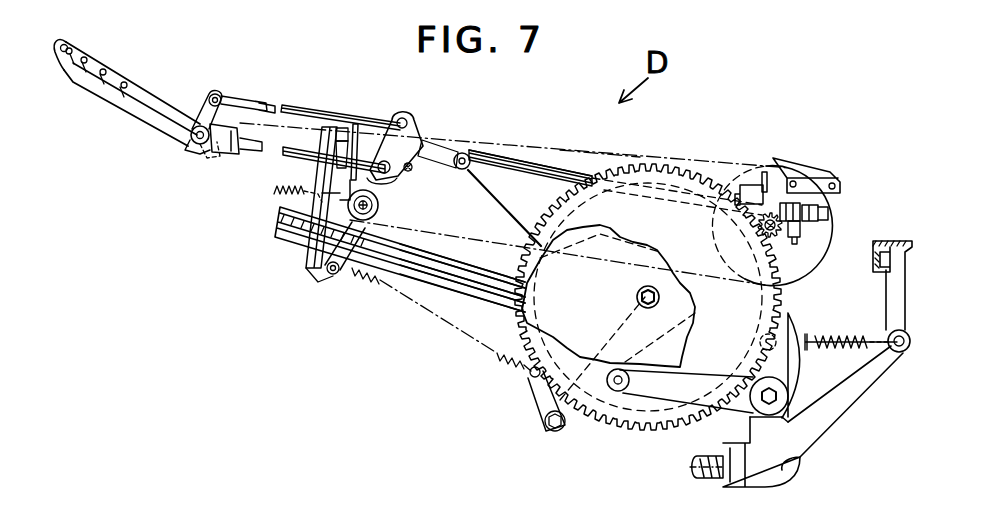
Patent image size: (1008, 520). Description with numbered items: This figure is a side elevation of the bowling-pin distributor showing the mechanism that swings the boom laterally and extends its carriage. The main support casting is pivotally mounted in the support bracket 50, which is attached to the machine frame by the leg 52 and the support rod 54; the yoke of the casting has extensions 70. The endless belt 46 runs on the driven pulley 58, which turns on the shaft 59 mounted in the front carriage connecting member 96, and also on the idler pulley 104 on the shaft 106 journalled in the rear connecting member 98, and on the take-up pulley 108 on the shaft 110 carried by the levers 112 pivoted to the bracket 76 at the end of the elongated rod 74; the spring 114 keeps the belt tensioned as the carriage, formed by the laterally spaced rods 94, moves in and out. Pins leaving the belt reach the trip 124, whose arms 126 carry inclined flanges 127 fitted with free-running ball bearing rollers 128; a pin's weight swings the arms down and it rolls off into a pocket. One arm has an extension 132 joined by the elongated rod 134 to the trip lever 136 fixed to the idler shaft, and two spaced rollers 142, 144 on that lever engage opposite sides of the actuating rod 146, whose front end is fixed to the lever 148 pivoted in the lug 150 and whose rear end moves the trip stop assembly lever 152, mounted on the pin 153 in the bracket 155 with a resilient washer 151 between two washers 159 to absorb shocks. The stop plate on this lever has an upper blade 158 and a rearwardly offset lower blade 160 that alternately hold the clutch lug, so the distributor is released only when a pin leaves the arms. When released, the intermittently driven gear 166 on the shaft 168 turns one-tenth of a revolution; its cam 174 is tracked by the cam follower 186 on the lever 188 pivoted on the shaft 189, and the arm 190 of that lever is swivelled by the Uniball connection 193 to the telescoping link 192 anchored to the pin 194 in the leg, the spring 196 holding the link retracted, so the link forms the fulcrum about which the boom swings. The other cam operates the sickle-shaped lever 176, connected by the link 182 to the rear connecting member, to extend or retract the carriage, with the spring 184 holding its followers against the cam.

The endless belt 46 is at (614, 153).
The support bracket 50 is at (781, 472).
The leg 52 is at (890, 292).
The support rod 54 is at (717, 480).
The driven pulley 58 is at (207, 157).
The shaft 59 is at (190, 142).
The extensions of yoke 70 is at (843, 177).
The elongated rod 74 is at (502, 292).
The bracket 76 is at (306, 243).
The elongated rods 94 is at (292, 158).
The front carriage connecting member 96 is at (227, 156).
The rear carriage connecting member 98 is at (342, 142).
The idler pulley 104 is at (341, 168).
The shaft 106 is at (403, 174).
The take-up pulley 108 is at (379, 213).
The shaft 110 is at (372, 203).
The levers 112 is at (350, 276).
The spring 114 is at (274, 191).
The trip 124 is at (127, 50).
The arms 126 is at (146, 108).
The flange 127 is at (94, 78).
The ball bearing rollers 128 is at (70, 44).
The extension 132 is at (209, 100).
The elongated rod 134 is at (268, 101).
The trip lever 136 is at (418, 122).
The roller 142 is at (466, 153).
The roller 144 is at (445, 170).
The actuating rod 146 is at (502, 158).
The lever 148 is at (360, 122).
The lug 150 is at (329, 126).
The resilient washer 151 is at (791, 201).
The trip stop assembly lever 152 is at (752, 182).
The pin 153 is at (826, 215).
The bracket 155 is at (830, 208).
The upper blade 158 is at (764, 170).
The washers 159 is at (800, 205).
The lower blade 160 is at (765, 230).
The intermittently driven gear 166 is at (664, 432).
The shaft 168 is at (627, 297).
The cam 174 is at (694, 340).
The sickle-shaped lever 176 is at (503, 208).
The link 182 is at (496, 178).
The spring 184 is at (506, 359).
The cam follower 186 is at (608, 384).
The lever 188 is at (680, 404).
The shaft 189 is at (750, 392).
The arm 190 is at (797, 380).
The telescoping link 192 is at (840, 334).
The Uniball connection 193 is at (777, 333).
The pin 194 is at (903, 360).
The spring 196 is at (844, 334).